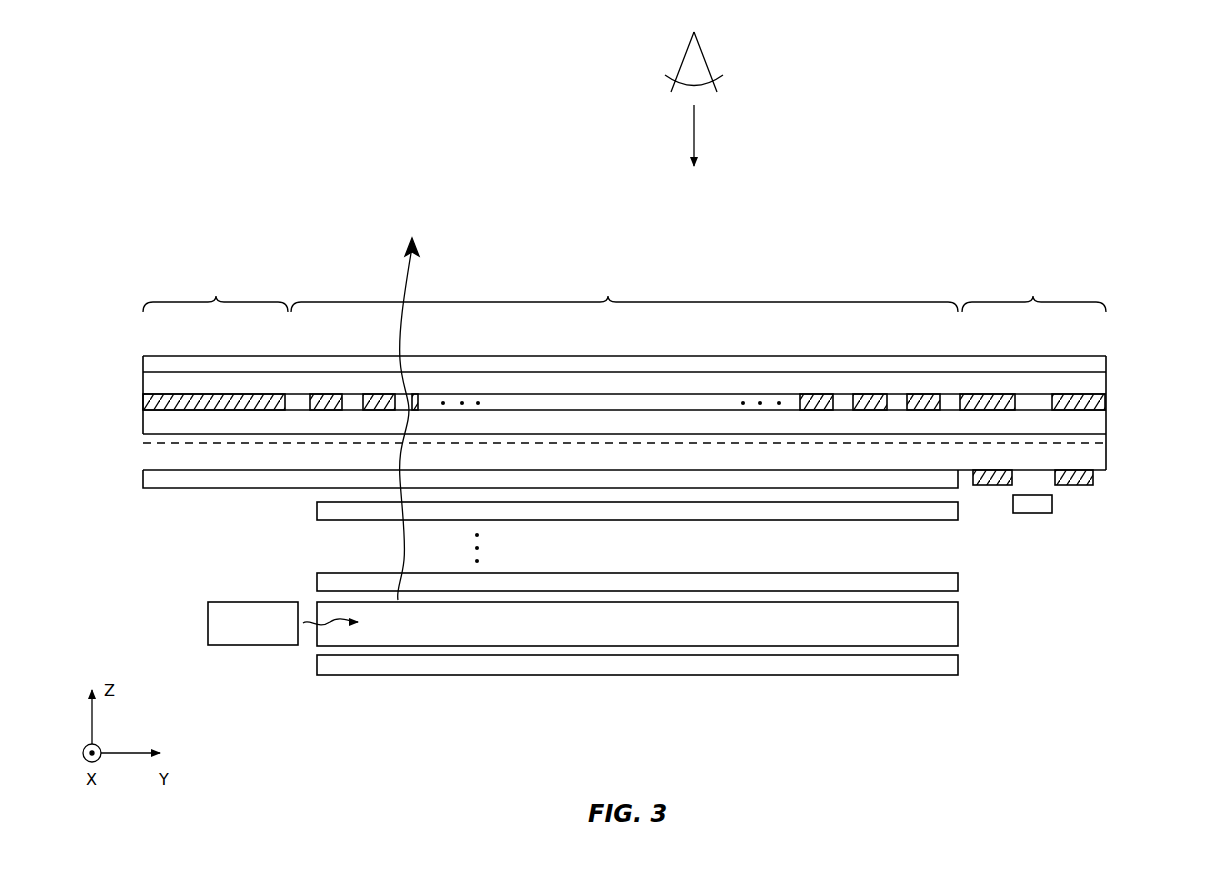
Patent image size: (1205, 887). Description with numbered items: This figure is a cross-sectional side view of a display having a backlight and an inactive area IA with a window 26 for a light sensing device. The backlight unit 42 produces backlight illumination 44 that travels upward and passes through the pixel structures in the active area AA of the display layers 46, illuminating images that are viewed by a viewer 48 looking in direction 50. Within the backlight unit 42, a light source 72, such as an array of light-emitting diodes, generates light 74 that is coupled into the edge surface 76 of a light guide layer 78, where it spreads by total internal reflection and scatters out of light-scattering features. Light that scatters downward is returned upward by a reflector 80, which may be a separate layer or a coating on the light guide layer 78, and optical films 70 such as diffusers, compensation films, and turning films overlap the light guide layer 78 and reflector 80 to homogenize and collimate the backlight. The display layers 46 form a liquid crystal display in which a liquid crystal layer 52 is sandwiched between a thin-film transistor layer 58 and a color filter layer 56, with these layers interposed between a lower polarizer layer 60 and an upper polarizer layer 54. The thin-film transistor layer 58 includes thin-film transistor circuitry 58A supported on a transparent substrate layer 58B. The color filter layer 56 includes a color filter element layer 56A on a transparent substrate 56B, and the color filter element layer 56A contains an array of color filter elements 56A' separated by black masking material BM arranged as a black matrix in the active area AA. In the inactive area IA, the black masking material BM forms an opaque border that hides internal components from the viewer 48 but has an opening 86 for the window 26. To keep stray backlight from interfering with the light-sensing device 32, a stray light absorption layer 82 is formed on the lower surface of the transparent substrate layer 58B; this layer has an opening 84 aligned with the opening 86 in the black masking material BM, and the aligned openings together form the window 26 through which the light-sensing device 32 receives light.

The viewer 48 is at (700, 52).
The direction 50 is at (695, 136).
The backlight illumination 44 is at (412, 272).
The upper polarizer layer 54 is at (320, 357).
The transparent substrate 56B is at (624, 352).
The color filter element layer 56A is at (488, 368).
The color filter elements 56A' is at (893, 370).
The black masking material BM is at (808, 394).
The window 26 is at (1033, 386).
The display layers 46 is at (625, 427).
The liquid crystal layer 52 is at (143, 418).
The color filter layer 56 is at (645, 361).
The thin-film transistor layer 58 is at (660, 456).
The thin-film transistor circuitry 58A is at (1093, 437).
The transparent substrate layer 58B is at (1093, 457).
The lower polarizer layer 60 is at (215, 485).
The optical films 70 is at (323, 512).
The backlight unit 42 is at (627, 615).
The stray light absorption layer 82 is at (985, 487).
The light-sensing device 32 is at (1030, 515).
The opening 84 is at (1050, 486).
The opening 86 is at (1036, 416).
The light source 72 is at (242, 633).
The edge surface 76 is at (315, 635).
The light 74 is at (333, 623).
The light guide layer 78 is at (463, 632).
The reflector 80 is at (540, 673).
The inactive area IA is at (624, 293).
The active area AA is at (624, 293).